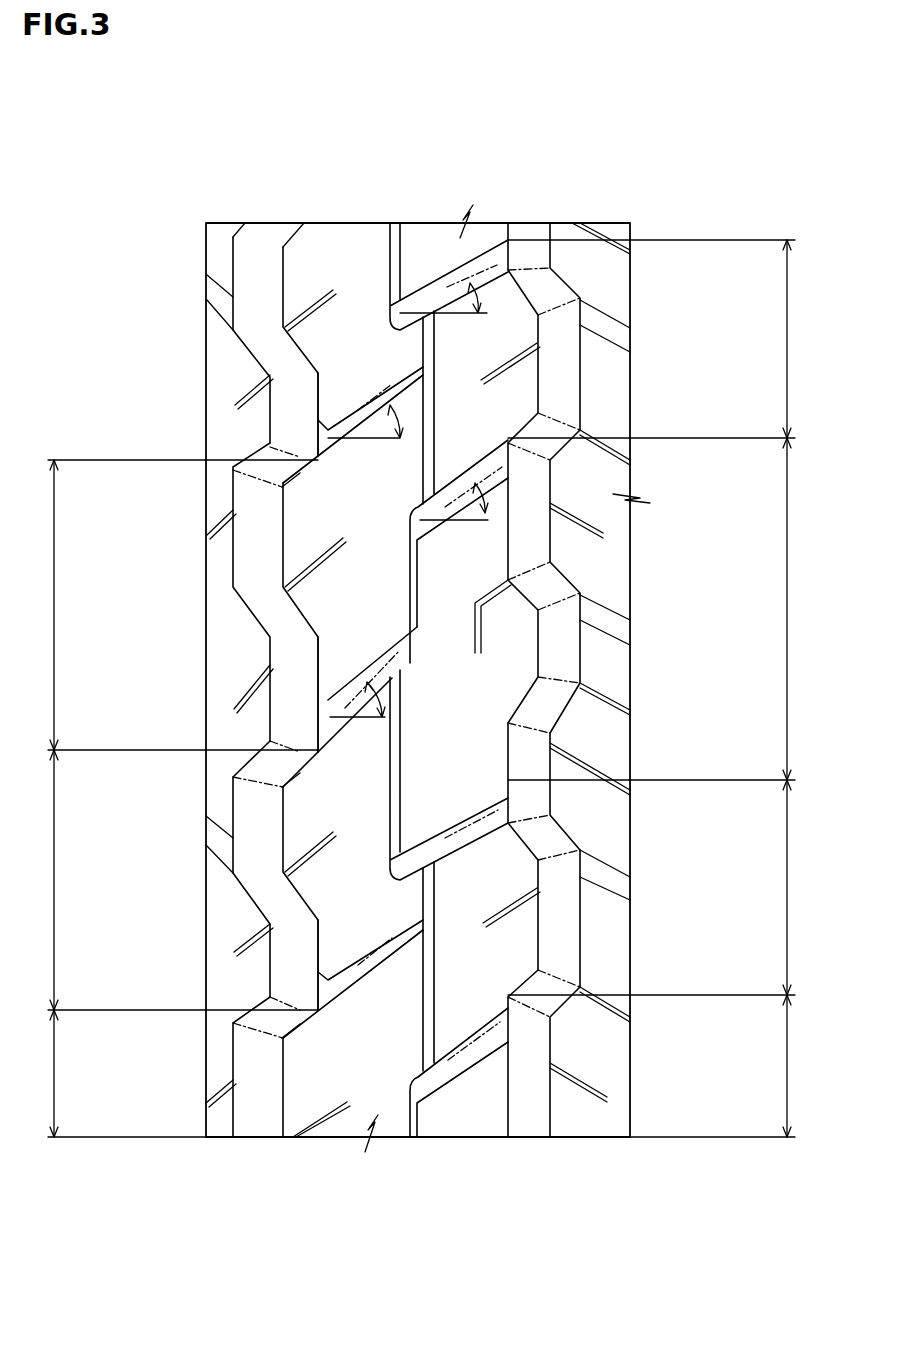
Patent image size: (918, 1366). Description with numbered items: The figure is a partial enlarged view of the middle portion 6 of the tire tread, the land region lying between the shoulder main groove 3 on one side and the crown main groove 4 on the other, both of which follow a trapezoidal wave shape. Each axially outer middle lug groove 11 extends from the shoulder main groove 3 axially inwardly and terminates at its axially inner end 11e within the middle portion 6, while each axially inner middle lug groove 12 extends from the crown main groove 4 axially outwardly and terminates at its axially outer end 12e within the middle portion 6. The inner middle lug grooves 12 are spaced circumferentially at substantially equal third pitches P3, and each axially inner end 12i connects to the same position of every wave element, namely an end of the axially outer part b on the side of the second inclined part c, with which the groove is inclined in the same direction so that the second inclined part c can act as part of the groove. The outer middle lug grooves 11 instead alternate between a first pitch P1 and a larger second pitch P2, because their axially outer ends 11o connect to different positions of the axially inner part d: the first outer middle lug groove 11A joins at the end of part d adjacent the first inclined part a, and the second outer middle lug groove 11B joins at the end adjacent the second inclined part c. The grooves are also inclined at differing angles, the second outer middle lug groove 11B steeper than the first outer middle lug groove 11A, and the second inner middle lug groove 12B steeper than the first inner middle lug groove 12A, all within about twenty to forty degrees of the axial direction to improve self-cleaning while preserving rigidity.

The shoulder main groove 3 is at (532, 252).
The crown main groove 4 is at (267, 243).
The middle portion 6 is at (344, 198).
The axially outer middle lug groove 11 is at (593, 637).
The first outer middle lug groove 11A is at (440, 300).
The second outer middle lug groove 11B is at (472, 468).
The axially inner end 11e is at (375, 318).
The axially outer end 11o is at (556, 298).
The axially inner middle lug groove 12 is at (247, 687).
The first inner middle lug groove 12A is at (420, 367).
The second inner middle lug groove 12B is at (359, 661).
The axially outer end 12e is at (370, 396).
The axially inner end 12i is at (330, 445).
The first inclined part a is at (553, 283).
The axially outer part b is at (290, 415).
The second inclined part c is at (275, 468).
The axially inner part d is at (540, 235).
The first pitch P1 is at (655, 688).
The second pitch P2 is at (788, 844).
The third pitch P3 is at (179, 798).